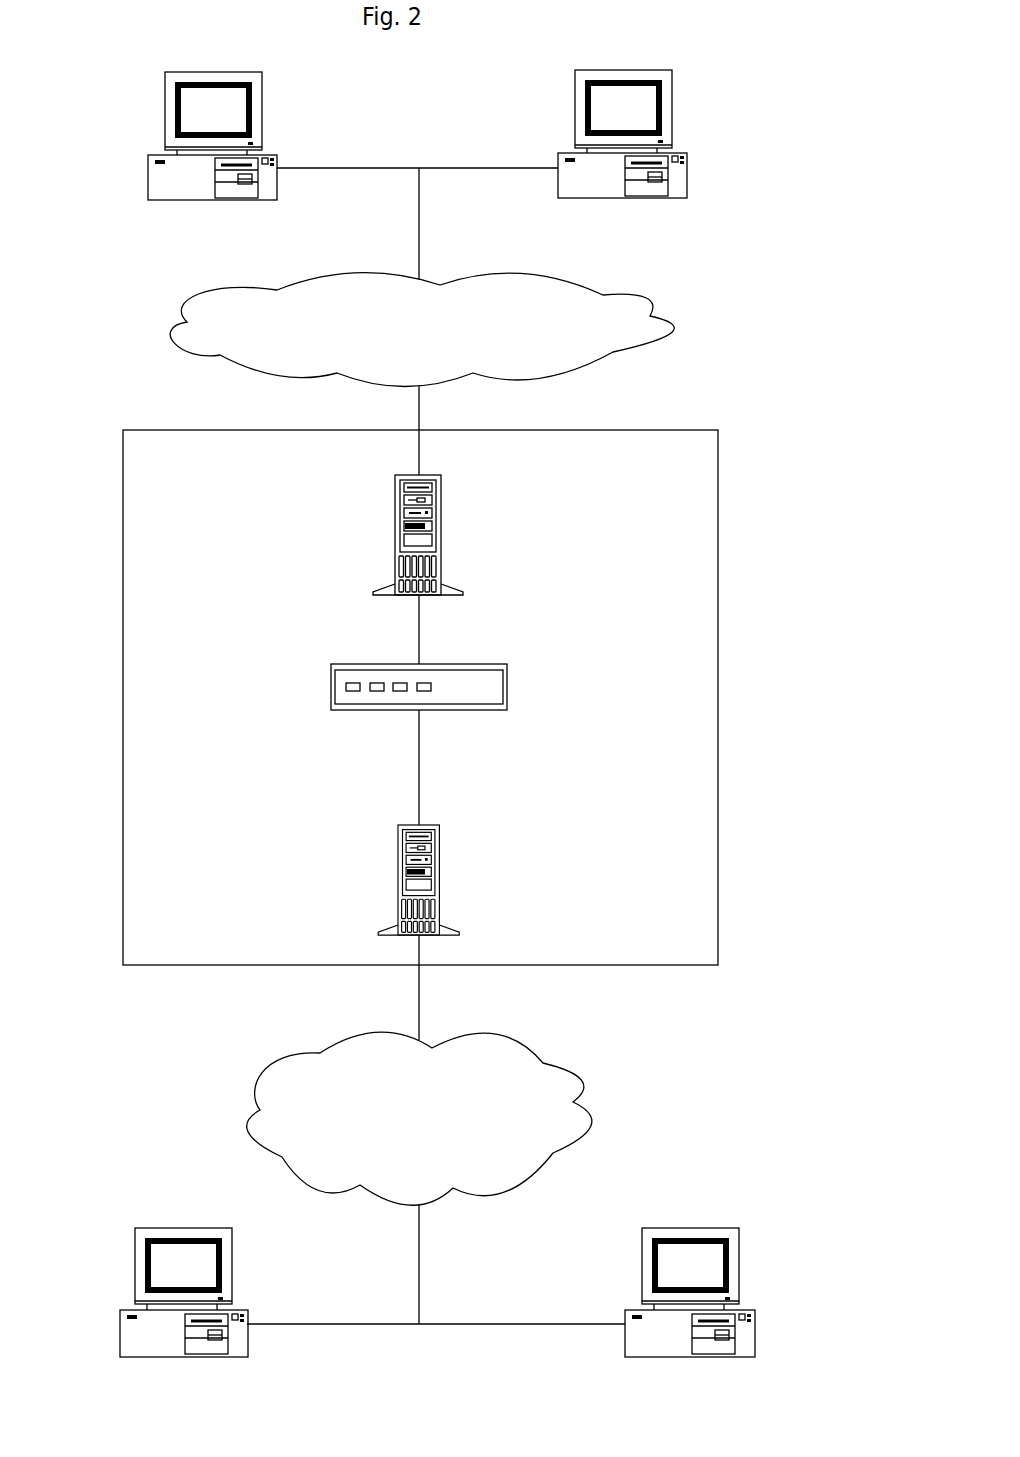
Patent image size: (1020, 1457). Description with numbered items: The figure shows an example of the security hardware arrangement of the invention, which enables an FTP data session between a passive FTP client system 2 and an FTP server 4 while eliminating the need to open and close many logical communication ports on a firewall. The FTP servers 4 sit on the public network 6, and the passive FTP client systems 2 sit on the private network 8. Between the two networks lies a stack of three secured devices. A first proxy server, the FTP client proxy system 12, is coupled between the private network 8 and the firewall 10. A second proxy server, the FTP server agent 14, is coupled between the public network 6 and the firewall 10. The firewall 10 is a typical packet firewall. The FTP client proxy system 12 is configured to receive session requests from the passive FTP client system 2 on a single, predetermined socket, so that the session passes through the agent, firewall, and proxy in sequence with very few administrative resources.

The passive FTP client system 2 is at (137, 1262).
The FTP server 4 is at (164, 93).
The public network 6 is at (672, 330).
The private network 8 is at (582, 1108).
The firewall 10 is at (507, 683).
The FTP client proxy system 12 is at (439, 843).
The FTP server agent 14 is at (441, 517).